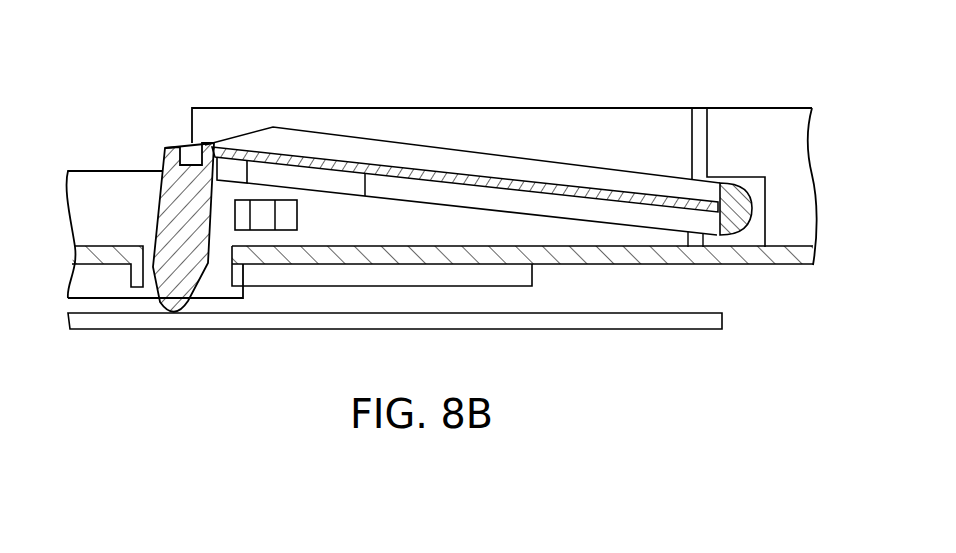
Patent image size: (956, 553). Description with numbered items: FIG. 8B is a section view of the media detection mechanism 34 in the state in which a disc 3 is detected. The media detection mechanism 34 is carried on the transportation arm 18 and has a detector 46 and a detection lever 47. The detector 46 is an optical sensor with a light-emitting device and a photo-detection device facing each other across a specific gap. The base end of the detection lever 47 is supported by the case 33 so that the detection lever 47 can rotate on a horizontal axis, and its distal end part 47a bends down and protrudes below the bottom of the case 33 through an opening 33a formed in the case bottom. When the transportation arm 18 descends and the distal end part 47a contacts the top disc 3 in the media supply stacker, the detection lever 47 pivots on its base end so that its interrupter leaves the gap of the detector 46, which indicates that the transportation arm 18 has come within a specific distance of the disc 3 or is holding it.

The transportation arm 18 is at (688, 80).
The case 33 is at (587, 108).
The opening 33a is at (146, 268).
The media detection mechanism 34 is at (146, 113).
The detector 46 is at (297, 214).
The detection lever 47 is at (488, 155).
The distal end part 47a is at (205, 266).
The disc 3 is at (620, 332).